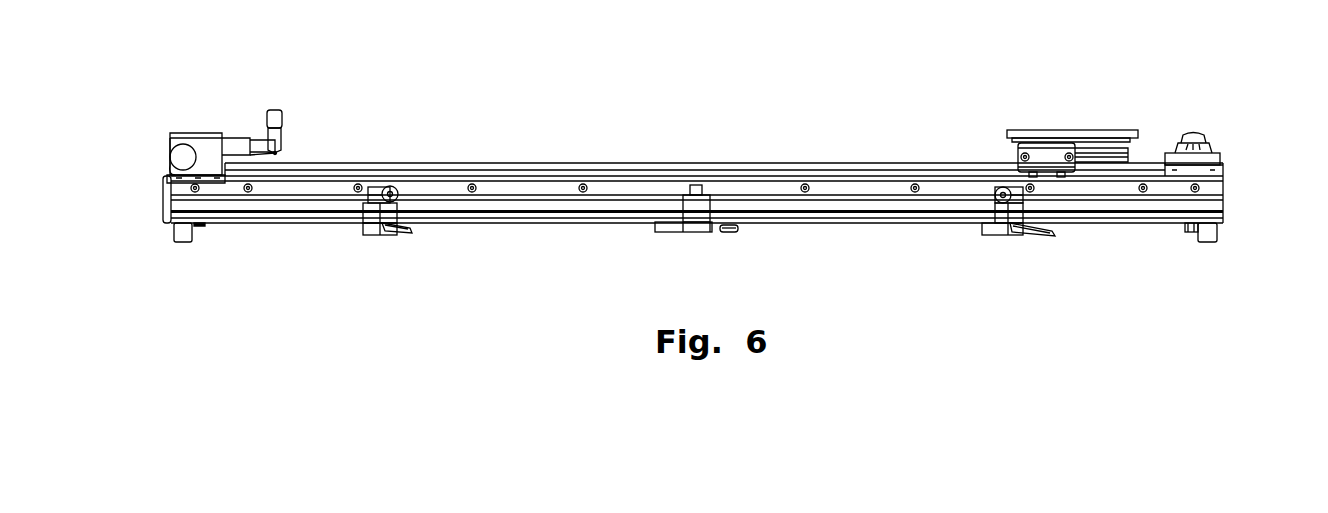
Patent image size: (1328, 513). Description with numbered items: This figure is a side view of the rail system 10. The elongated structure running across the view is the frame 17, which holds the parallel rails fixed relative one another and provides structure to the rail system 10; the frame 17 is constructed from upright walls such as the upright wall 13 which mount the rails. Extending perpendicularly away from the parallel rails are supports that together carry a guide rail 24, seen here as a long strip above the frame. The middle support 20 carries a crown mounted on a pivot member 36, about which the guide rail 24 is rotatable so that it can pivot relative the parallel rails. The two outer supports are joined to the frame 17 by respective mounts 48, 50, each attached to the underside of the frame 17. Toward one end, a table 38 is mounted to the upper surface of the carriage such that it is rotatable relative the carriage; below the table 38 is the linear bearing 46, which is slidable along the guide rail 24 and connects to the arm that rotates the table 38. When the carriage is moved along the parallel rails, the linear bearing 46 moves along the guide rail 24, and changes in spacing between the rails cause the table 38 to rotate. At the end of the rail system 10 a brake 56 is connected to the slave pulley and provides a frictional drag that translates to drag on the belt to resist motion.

The rail system 10 is at (512, 100).
The upright wall 13 is at (180, 203).
The frame 17 is at (832, 224).
The middle support 20 is at (700, 233).
The guide rail 24 is at (763, 168).
The pivot member 36 is at (693, 205).
The table 38 is at (1082, 130).
The linear bearing 46 is at (1048, 163).
The mount 48 is at (383, 237).
The mount 50 is at (1003, 237).
The brake 56 is at (1222, 160).